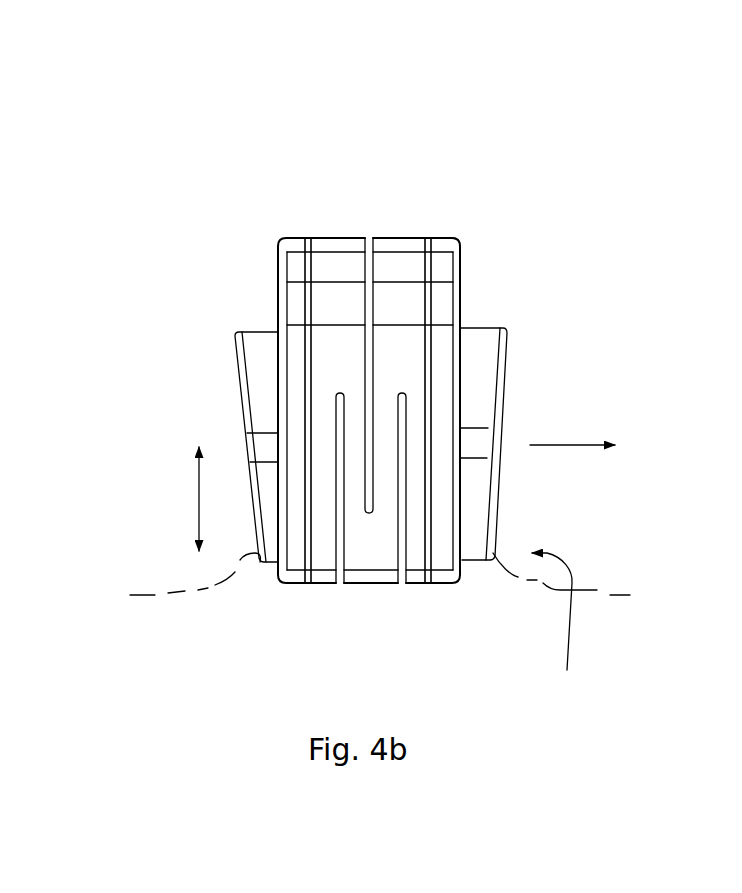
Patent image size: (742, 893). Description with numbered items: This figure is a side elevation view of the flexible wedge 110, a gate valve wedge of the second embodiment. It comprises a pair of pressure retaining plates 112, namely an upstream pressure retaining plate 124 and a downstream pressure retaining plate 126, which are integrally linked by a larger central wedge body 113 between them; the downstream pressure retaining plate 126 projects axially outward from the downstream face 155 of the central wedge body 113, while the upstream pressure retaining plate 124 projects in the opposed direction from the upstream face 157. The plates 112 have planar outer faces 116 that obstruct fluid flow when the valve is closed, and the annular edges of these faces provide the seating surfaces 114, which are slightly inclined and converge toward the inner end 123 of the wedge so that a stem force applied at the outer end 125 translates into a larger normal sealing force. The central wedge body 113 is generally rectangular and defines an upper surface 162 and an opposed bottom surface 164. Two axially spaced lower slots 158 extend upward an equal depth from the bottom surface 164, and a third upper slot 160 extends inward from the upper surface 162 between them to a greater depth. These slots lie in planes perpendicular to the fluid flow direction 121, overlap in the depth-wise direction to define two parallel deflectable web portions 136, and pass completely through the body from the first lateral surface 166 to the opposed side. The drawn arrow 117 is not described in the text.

The flexible wedge 110 is at (443, 133).
The pressure retaining plates 112 is at (258, 330).
The central wedge body 113 is at (385, 233).
The seating surfaces 114 is at (381, 584).
The planar outer faces 116 is at (232, 355).
The axial direction 117 is at (200, 488).
The direction of fluid flow 121 is at (553, 445).
The inner end 123 is at (568, 625).
The upstream pressure retaining plate 124 is at (260, 387).
The outer end 125 is at (355, 220).
The downstream pressure retaining plate 126 is at (473, 480).
The deflectable web portions 136 is at (355, 462).
The downstream face 155 is at (460, 288).
The upstream face 157 is at (277, 293).
The lower slots 158 is at (403, 543).
The upper slot 160 is at (368, 272).
The upper surface 162 is at (397, 238).
The bottom surface 164 is at (378, 583).
The first lateral surface 166 is at (332, 347).